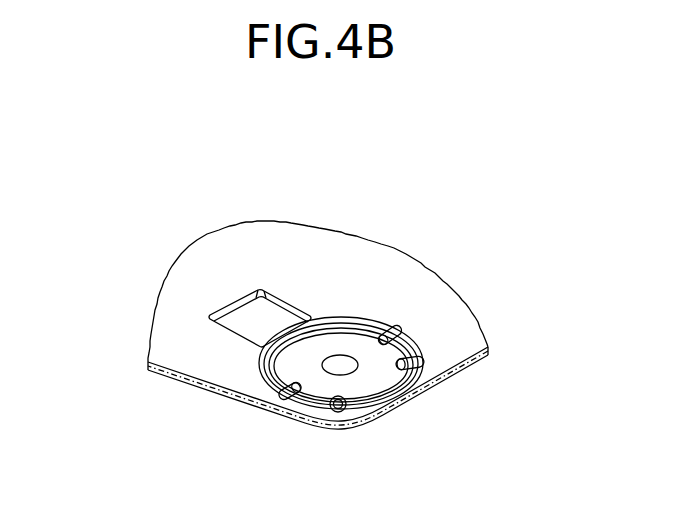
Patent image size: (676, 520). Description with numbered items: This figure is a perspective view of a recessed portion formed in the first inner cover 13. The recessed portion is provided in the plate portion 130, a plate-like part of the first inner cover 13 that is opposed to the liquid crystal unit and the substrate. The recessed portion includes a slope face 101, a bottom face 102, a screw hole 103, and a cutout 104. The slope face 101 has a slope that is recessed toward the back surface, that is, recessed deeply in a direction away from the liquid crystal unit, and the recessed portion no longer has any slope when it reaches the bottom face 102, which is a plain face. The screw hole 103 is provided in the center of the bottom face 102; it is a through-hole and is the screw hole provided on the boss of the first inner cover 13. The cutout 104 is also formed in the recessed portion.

The first inner cover 13 is at (158, 239).
The plate portion 130 is at (282, 240).
The slope face 101 is at (347, 317).
The bottom face 102 is at (293, 368).
The screw hole 103 is at (342, 366).
The cutout 104 is at (286, 400).